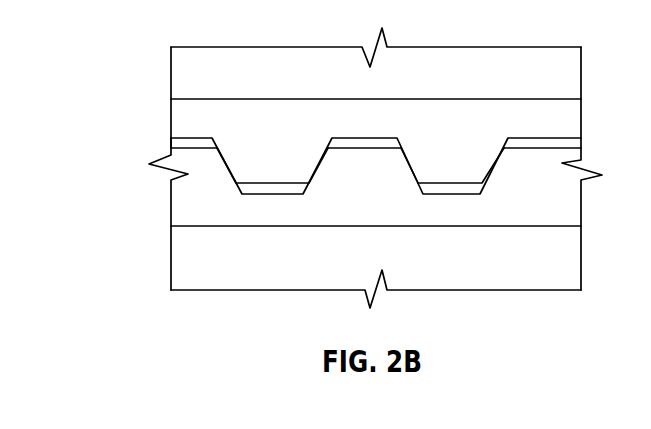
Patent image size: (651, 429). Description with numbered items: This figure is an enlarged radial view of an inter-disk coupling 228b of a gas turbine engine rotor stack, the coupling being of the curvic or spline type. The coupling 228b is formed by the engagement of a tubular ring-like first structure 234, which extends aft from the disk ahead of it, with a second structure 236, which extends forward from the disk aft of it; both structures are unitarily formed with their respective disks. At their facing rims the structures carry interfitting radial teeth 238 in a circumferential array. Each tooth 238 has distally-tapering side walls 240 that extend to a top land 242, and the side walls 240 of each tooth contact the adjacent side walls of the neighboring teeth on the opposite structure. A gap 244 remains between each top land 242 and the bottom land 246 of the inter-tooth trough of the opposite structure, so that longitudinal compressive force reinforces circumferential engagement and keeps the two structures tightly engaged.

The inter-disk coupling 228b is at (154, 127).
The first structure 234 is at (433, 272).
The second structure 236 is at (505, 72).
The teeth 238 is at (360, 193).
The side walls 240 is at (410, 165).
The top land 242 is at (363, 145).
The gap 244 is at (277, 175).
The bottom land 246 is at (460, 194).